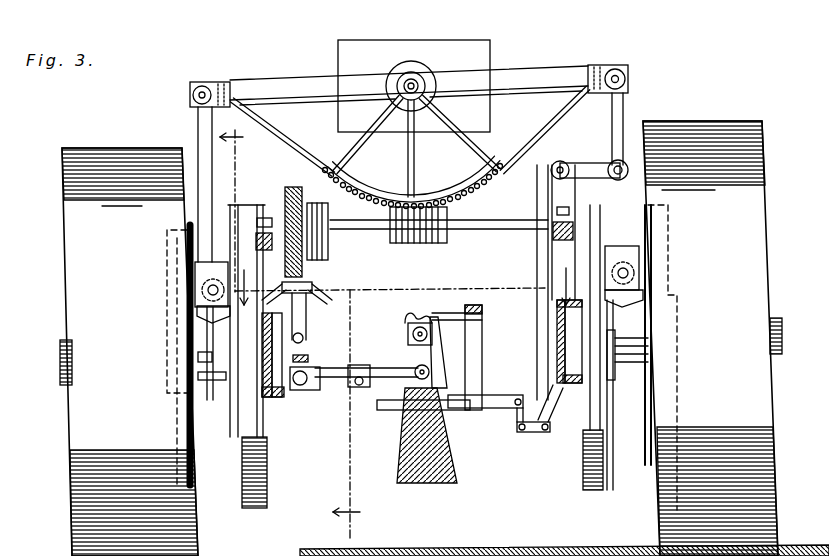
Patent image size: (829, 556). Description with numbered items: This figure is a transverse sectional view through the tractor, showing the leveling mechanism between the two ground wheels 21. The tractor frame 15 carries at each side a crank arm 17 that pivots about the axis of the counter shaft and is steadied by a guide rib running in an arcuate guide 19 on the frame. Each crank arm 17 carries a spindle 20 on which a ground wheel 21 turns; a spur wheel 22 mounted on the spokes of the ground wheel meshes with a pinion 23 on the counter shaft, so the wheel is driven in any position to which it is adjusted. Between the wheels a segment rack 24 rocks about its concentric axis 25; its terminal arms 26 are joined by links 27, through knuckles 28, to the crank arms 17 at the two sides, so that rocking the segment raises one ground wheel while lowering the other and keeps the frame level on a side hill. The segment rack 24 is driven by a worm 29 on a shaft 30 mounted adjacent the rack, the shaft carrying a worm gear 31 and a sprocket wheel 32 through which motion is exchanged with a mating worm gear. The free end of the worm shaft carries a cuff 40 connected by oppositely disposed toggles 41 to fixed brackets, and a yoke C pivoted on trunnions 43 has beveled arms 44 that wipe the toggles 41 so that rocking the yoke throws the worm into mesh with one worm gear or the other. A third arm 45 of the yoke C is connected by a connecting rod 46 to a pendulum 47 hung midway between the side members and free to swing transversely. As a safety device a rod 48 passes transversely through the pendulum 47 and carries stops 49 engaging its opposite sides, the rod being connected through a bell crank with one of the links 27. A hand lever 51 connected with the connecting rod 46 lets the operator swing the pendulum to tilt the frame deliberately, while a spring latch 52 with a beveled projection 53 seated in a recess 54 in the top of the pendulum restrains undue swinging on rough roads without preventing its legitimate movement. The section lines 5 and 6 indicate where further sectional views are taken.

The section line 5- 5 is at (382, 335).
The section line 6- 6 is at (404, 276).
The tractor frame 15 is at (308, 408).
The crank arms 17 is at (228, 312).
The arcuate guide 19 is at (253, 428).
The spindle 20 is at (638, 352).
The ground wheel 21 is at (95, 155).
The spur wheel 22 is at (200, 485).
The pinion 23 is at (196, 318).
The segment rack 24 is at (417, 158).
The axis 25 is at (415, 82).
The terminal arms 26 is at (213, 83).
The links 27 is at (198, 128).
The knuckles 28 is at (195, 290).
The worm 29 is at (418, 237).
The shaft 30 is at (478, 232).
The worm gear 31 is at (283, 190).
The sprocket wheel 32 is at (338, 235).
The cuff 40 is at (313, 339).
The toggles 41 is at (308, 296).
The trunnions 43 is at (313, 361).
The beveled arms 44 is at (258, 186).
The third arm 45 is at (350, 373).
The connecting rod 46 is at (399, 382).
The pendulum 47 is at (443, 472).
The safety rod 48 is at (505, 425).
The stops 49 is at (377, 411).
The hand lever 51 is at (357, 390).
The spring latch 52 is at (442, 318).
The beveled projection 53 is at (410, 325).
The recess 54 is at (435, 328).
The yoke C is at (329, 396).